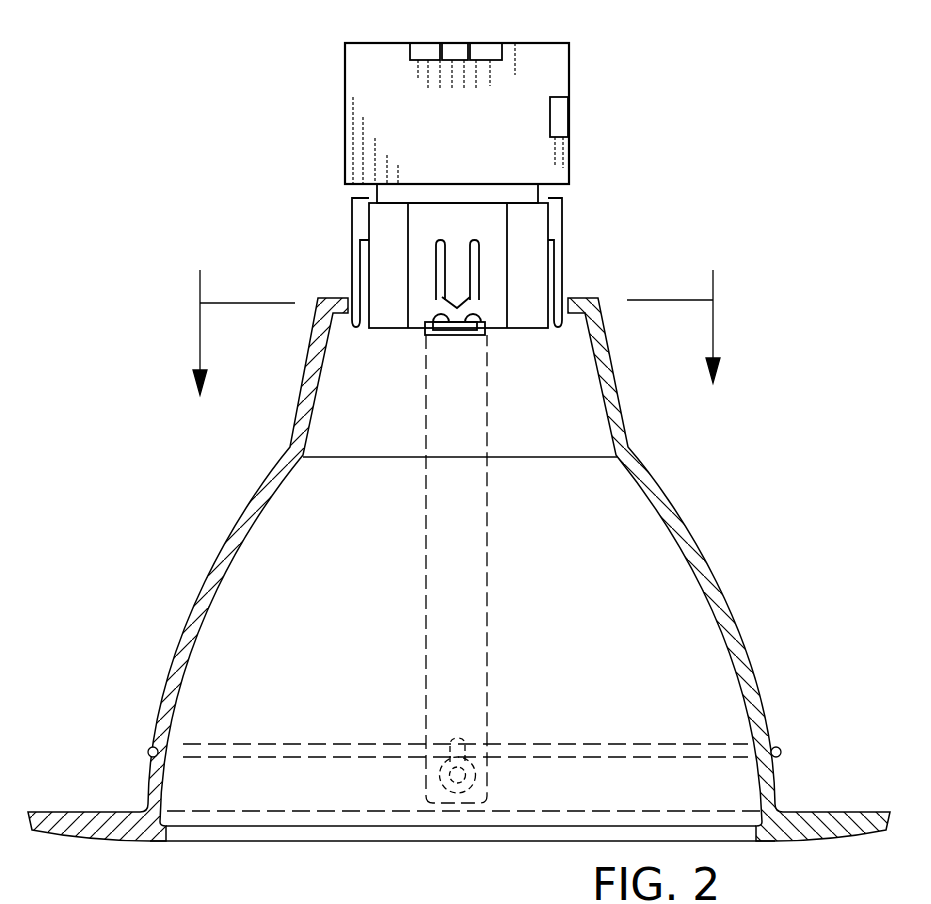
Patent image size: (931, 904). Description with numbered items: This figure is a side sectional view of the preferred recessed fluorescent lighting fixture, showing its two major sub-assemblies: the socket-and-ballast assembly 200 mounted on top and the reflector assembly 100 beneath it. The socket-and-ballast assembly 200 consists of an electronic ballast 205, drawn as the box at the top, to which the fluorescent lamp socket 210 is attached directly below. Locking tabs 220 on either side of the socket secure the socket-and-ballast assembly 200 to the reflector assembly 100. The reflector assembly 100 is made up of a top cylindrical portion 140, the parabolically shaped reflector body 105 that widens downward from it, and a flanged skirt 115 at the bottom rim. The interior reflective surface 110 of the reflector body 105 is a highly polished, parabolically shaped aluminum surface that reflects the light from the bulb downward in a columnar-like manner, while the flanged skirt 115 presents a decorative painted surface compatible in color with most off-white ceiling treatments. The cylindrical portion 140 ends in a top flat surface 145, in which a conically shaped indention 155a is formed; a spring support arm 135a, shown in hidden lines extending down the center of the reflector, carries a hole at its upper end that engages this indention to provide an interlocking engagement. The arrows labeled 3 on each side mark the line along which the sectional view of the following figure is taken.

The section line 3— 3 is at (209, 265).
The reflector assembly 100 is at (185, 571).
The reflector body 105 is at (685, 490).
The interior reflective surface 110 is at (464, 634).
The flanged skirt 115 is at (838, 812).
The spring support arm 135a is at (490, 612).
The top cylindrical portion 140 is at (623, 400).
The top flat surface 145 is at (459, 534).
The conically shaped indention 155a is at (457, 298).
The socket-and-ballast assembly 200 is at (606, 257).
The electronic ballast 205 is at (345, 96).
The fluorescent lamp socket 210 is at (350, 197).
The locking tabs 220 is at (352, 272).